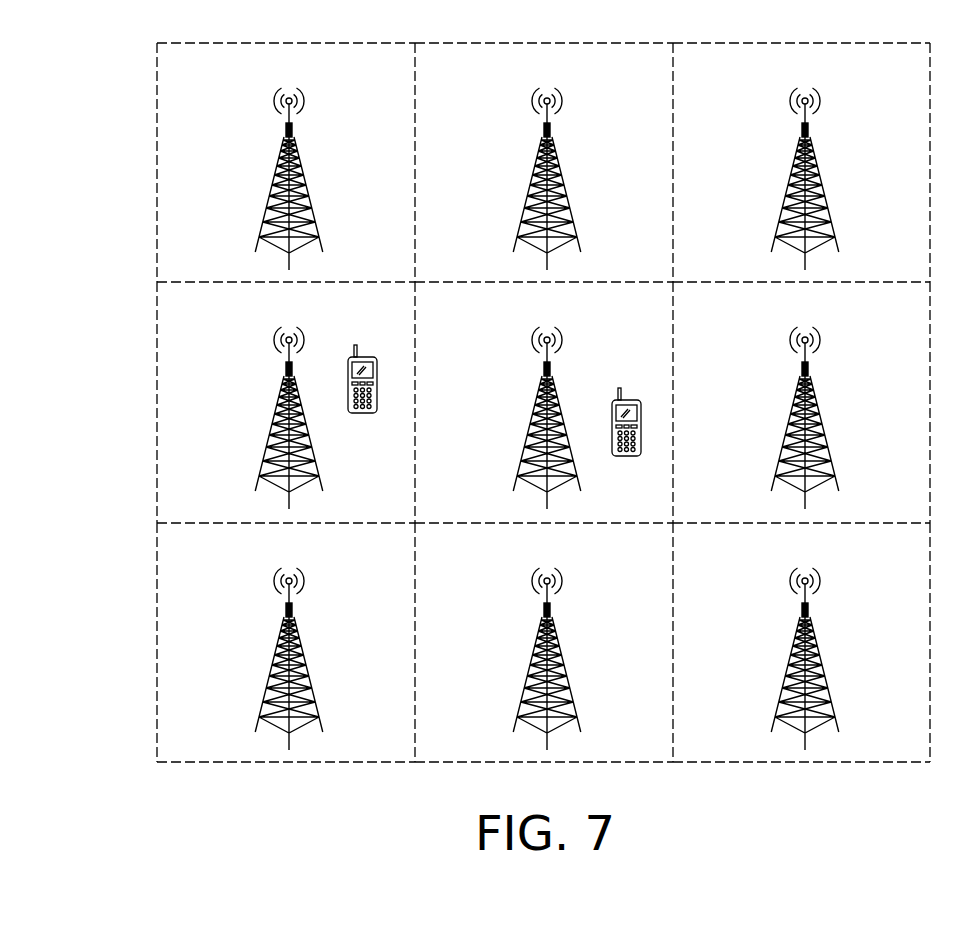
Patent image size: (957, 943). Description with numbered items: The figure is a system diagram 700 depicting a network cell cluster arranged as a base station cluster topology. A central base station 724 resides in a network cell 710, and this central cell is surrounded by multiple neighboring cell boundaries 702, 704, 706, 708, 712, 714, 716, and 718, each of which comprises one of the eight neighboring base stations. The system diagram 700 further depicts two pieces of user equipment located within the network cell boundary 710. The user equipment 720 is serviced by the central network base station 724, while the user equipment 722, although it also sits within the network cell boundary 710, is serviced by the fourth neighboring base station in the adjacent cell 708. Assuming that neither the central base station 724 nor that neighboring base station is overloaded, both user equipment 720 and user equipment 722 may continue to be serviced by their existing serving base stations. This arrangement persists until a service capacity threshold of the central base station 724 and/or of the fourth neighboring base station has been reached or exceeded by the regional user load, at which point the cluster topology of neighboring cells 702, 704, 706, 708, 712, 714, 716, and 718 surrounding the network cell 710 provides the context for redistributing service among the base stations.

The system diagram 700 is at (76, 100).
The neighboring cell boundary 702 is at (243, 42).
The neighboring cell boundary 704 is at (502, 42).
The neighboring cell boundary 706 is at (759, 42).
The neighboring cell boundary 708 is at (243, 282).
The network cell 710 is at (544, 382).
The neighboring cell boundary 712 is at (760, 282).
The neighboring cell boundary 714 is at (243, 522).
The neighboring cell boundary 716 is at (502, 522).
The neighboring cell boundary 718 is at (760, 522).
The user equipment 720 is at (362, 355).
The user equipment 722 is at (628, 398).
The central base station 724 is at (532, 414).